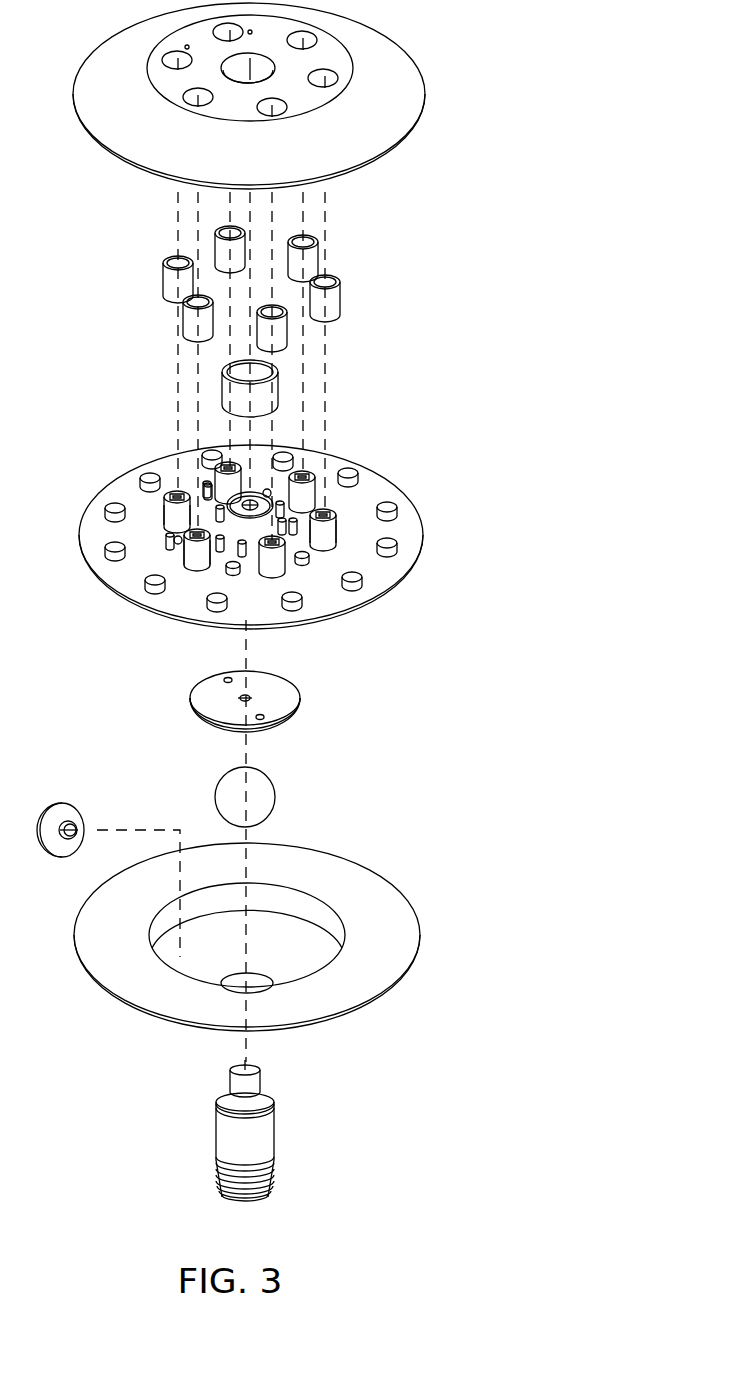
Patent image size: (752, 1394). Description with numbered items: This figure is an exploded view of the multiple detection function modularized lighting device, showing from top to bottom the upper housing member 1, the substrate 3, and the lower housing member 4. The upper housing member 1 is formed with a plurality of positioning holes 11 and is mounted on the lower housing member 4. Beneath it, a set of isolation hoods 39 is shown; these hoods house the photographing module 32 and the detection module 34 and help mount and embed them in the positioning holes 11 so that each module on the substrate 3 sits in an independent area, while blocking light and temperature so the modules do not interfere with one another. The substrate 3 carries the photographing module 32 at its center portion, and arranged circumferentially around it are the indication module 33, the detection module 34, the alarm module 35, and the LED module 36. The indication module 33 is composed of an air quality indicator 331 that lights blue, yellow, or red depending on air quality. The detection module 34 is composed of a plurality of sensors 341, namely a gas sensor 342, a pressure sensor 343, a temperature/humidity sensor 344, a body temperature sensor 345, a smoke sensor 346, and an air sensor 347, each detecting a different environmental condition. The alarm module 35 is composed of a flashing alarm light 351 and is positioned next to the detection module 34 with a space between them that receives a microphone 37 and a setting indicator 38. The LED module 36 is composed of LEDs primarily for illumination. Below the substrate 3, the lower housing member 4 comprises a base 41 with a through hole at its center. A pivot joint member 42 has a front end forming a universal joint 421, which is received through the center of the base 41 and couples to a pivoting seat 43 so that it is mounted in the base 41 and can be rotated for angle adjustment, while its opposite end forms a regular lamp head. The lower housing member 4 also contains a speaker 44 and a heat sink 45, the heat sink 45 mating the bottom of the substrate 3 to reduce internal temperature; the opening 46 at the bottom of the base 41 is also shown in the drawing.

The upper housing member 1 is at (395, 44).
The positioning holes 11 is at (188, 97).
The isolation hoods 39 is at (347, 223).
The substrate 3 is at (257, 537).
The LED module 36 is at (112, 497).
The indication module 33 is at (290, 543).
The photographing module 32 is at (298, 528).
The air quality indicator 331 is at (245, 552).
The setting indicator 38 is at (205, 483).
The pressure sensor 343 is at (225, 462).
The temperature/humidity sensor 344 is at (312, 472).
The gas sensor 342 is at (174, 493).
The microphone 37 is at (167, 517).
The detection module 34 is at (333, 500).
The body temperature sensor 345 is at (330, 528).
The air sensor 347 is at (205, 565).
The sensors 341 is at (191, 571).
The smoke sensor 346 is at (277, 560).
The alarm module 35 is at (167, 542).
The flashing alarm light 351 is at (177, 540).
The lower housing member 4 is at (423, 695).
The pivoting seat 43 is at (192, 692).
The universal joint 421 is at (222, 795).
The speaker 44 is at (58, 815).
The base 41 is at (93, 980).
The heat sink 45 is at (103, 910).
The bottom hole 46 is at (210, 964).
The pivot joint member 42 is at (216, 1132).